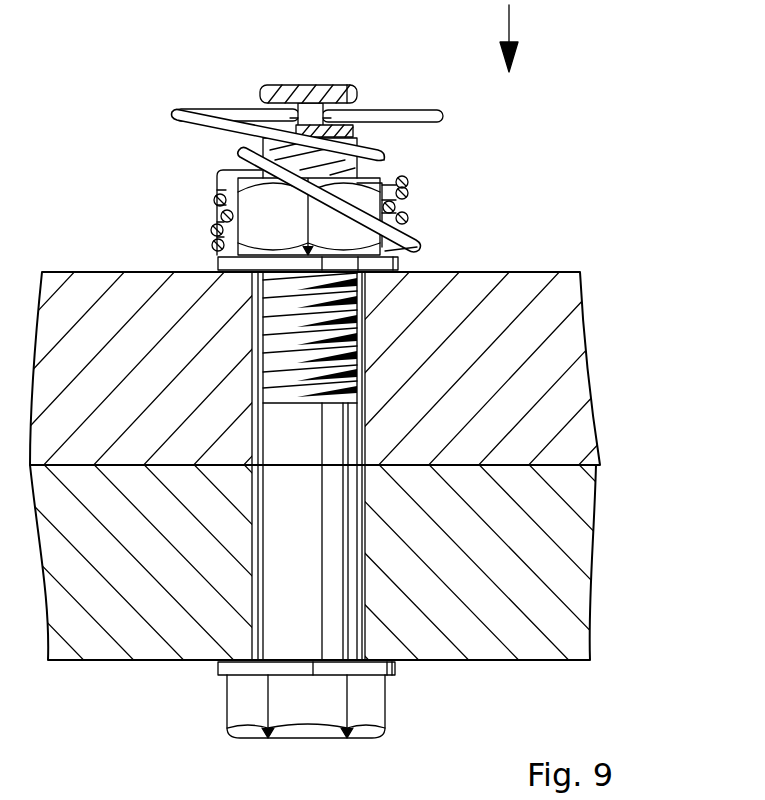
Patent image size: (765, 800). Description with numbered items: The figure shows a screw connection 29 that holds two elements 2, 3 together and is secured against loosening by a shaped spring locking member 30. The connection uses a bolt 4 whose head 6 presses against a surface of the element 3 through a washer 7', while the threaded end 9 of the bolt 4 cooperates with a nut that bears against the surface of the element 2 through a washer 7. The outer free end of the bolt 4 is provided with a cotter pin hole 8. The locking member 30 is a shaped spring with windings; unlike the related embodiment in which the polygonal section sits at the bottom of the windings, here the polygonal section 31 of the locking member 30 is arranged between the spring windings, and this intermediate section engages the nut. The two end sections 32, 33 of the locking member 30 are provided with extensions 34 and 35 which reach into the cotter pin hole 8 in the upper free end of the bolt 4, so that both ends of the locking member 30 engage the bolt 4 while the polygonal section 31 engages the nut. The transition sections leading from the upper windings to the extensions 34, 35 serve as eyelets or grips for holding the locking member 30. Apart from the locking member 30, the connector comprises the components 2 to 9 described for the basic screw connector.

The element 2 is at (573, 348).
The element 3 is at (587, 548).
The bolt 4 is at (335, 570).
The head 6 is at (377, 712).
The washer 7 is at (273, 239).
The washer 7' is at (269, 695).
The cotter pin hole 8 is at (320, 83).
The threaded end 9 is at (360, 343).
The screw connection 29 is at (625, 115).
The locking member 30 is at (150, 68).
The polygonal section 31 is at (407, 207).
The end section 32 is at (240, 107).
The end section 33 is at (388, 107).
The extension 34 is at (283, 110).
The extension 35 is at (350, 103).